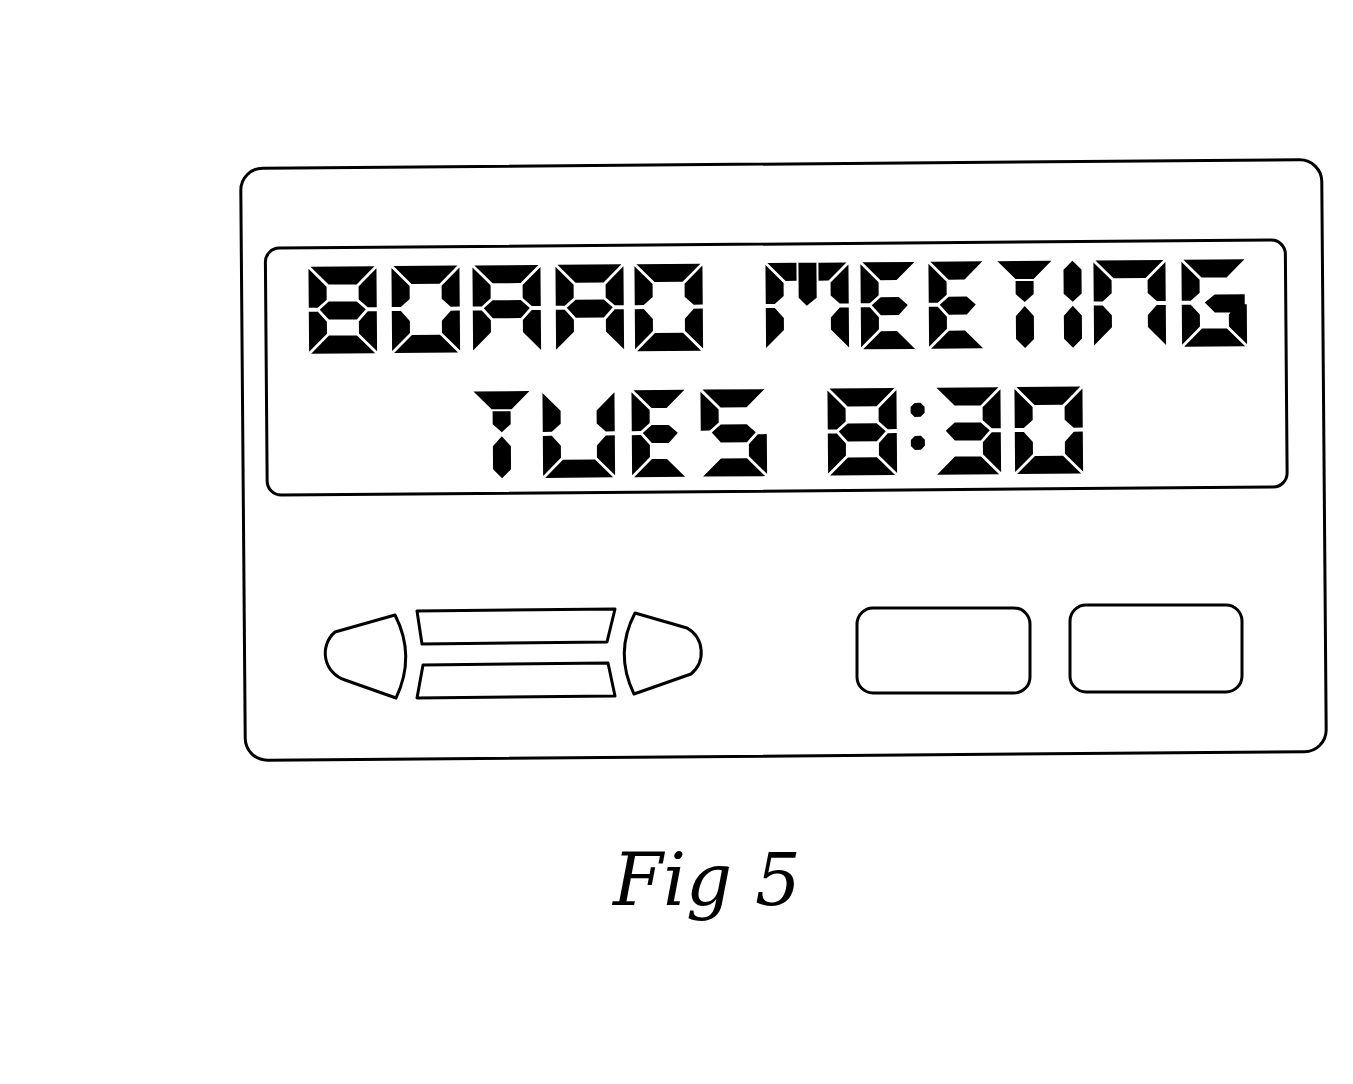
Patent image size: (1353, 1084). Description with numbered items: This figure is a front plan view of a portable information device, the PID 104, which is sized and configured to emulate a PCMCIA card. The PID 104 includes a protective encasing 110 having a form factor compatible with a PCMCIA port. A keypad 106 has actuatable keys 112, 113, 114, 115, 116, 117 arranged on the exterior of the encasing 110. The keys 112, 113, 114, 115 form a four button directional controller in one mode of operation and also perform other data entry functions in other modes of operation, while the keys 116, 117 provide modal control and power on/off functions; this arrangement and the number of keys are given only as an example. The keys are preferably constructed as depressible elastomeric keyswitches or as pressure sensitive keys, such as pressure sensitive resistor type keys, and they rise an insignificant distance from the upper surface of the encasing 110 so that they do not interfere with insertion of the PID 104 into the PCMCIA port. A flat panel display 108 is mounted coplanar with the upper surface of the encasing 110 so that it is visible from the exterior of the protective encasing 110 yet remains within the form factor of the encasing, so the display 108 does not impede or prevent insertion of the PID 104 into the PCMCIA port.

The PID 104 is at (473, 122).
The keypad 106 is at (468, 718).
The flat panel display 108 is at (820, 253).
The protective encasing 110 is at (784, 460).
The key 112 is at (380, 667).
The key 113 is at (537, 623).
The key 114 is at (652, 635).
The key 115 is at (537, 683).
The key 116 is at (990, 683).
The key 117 is at (1123, 627).